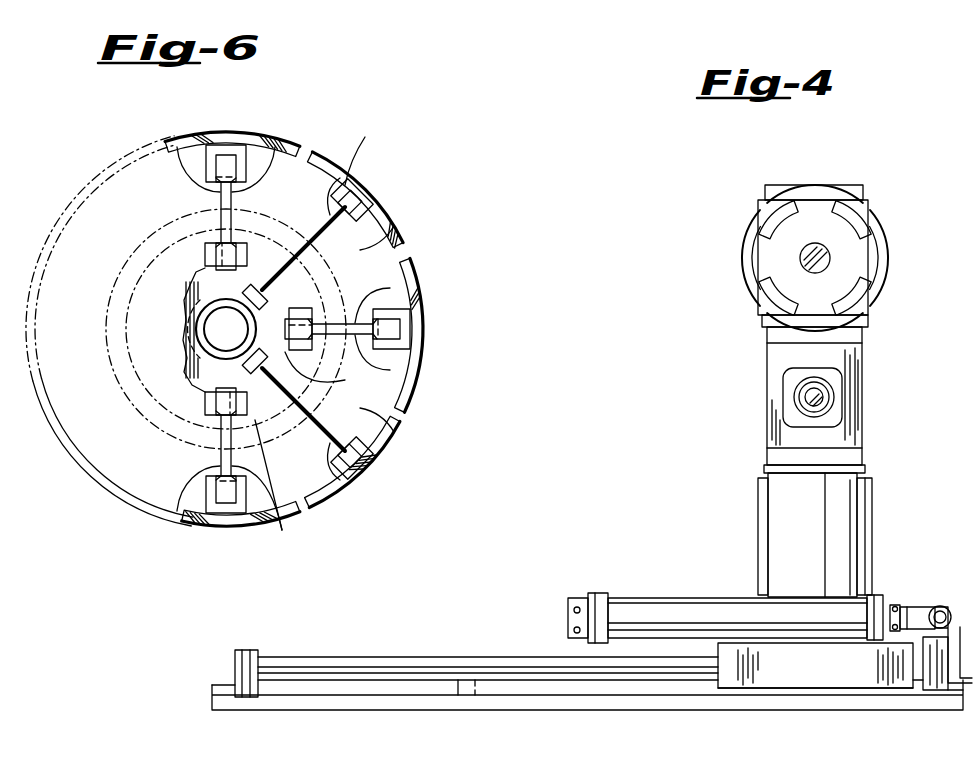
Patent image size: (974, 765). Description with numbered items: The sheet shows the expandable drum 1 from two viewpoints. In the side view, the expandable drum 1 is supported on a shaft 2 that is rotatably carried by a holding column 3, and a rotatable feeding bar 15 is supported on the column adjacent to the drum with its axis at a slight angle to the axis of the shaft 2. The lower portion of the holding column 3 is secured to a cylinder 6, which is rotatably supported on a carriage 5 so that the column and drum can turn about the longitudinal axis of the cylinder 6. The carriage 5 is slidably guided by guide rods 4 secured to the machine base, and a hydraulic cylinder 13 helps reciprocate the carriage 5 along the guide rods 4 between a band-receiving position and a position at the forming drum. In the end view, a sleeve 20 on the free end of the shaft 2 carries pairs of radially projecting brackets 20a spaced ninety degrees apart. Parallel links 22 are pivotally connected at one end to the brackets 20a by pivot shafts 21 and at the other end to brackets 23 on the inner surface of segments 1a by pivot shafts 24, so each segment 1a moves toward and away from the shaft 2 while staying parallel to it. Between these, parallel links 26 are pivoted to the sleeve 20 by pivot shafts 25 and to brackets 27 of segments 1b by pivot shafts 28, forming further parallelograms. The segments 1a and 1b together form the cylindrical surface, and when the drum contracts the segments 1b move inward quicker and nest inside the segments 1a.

In FIG. 4, the expandable drum 1 is at (767, 293).
In FIG. 6, the segment 1a is at (300, 147).
In FIG. 6, the segment 1b is at (398, 233).
In FIG. 4, the shaft 2 is at (798, 258).
In FIG. 4, the holding column 3 is at (766, 358).
In FIG. 4, the guide rods 4 is at (485, 667).
In FIG. 4, the carriage 5 is at (733, 650).
In FIG. 4, the cylinder 6 is at (775, 504).
In FIG. 4, the hydraulic cylinder 13 is at (641, 605).
In FIG. 4, the rotatable feeding bar 15 is at (800, 398).
In FIG. 6, the sleeve 20 is at (190, 293).
In FIG. 6, the radially projecting bracket 20a is at (222, 227).
In FIG. 6, the pivot shaft 21 is at (205, 255).
In FIG. 6, the parallel link 22 is at (220, 193).
In FIG. 6, the bracket 23 is at (413, 318).
In FIG. 6, the pivot shaft 24 is at (405, 345).
In FIG. 6, the pivot shaft 25 is at (195, 307).
In FIG. 6, the parallel link 26 is at (335, 172).
In FIG. 6, the bracket 27 is at (367, 218).
In FIG. 6, the pivot shaft 28 is at (356, 195).